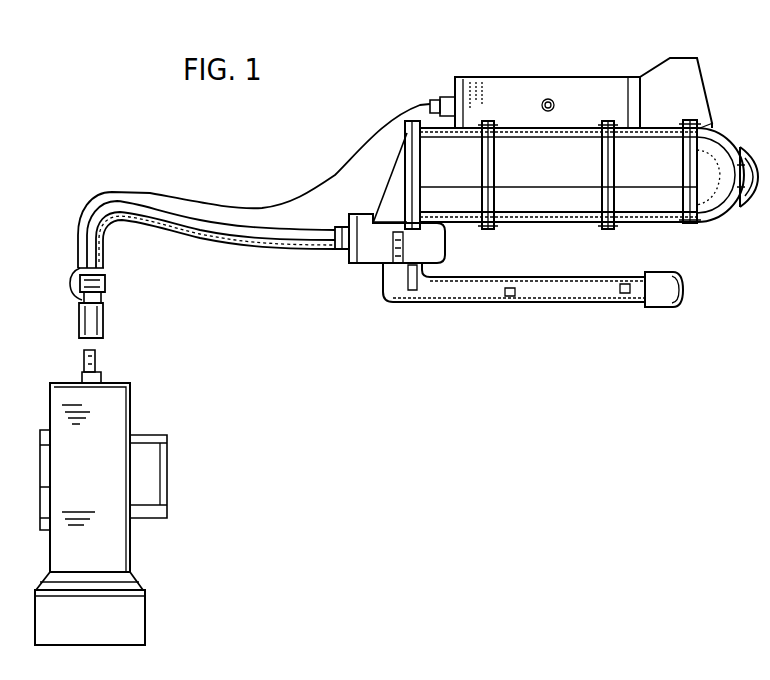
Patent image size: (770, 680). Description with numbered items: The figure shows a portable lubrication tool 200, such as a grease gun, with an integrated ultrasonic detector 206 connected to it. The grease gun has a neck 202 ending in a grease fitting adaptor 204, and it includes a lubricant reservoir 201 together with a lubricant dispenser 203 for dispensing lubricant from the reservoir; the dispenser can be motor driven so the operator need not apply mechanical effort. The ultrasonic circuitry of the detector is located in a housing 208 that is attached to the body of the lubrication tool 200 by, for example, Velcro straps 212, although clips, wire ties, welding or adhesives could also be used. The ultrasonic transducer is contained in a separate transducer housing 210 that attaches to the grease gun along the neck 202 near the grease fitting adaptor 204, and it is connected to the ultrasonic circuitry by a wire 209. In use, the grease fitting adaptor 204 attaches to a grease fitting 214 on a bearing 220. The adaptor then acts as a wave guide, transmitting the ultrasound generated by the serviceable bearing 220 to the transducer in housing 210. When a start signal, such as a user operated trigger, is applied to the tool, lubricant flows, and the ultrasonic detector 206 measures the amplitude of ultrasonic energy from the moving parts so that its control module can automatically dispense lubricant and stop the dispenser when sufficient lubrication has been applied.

The lubrication tool 200 is at (545, 223).
The lubricant reservoir 201 is at (538, 140).
The neck 202 is at (258, 242).
The lubricant dispenser 203 is at (347, 270).
The grease fitting adaptor 204 is at (103, 318).
The ultrasonic detector 206 is at (472, 76).
The housing 208 is at (621, 89).
The wire 209 is at (295, 202).
The transducer housing 210 is at (72, 276).
The straps 212 is at (484, 216).
The grease fitting 214 is at (100, 363).
The bearing 220 is at (120, 551).